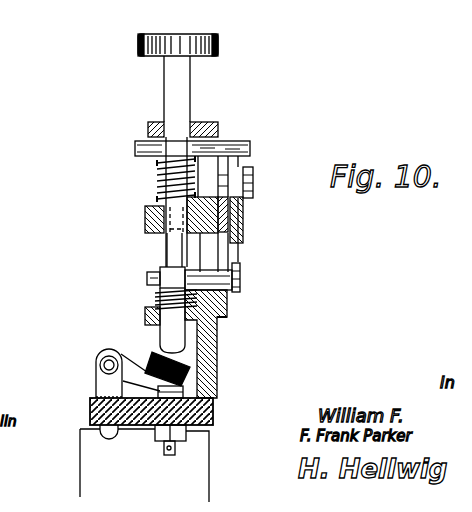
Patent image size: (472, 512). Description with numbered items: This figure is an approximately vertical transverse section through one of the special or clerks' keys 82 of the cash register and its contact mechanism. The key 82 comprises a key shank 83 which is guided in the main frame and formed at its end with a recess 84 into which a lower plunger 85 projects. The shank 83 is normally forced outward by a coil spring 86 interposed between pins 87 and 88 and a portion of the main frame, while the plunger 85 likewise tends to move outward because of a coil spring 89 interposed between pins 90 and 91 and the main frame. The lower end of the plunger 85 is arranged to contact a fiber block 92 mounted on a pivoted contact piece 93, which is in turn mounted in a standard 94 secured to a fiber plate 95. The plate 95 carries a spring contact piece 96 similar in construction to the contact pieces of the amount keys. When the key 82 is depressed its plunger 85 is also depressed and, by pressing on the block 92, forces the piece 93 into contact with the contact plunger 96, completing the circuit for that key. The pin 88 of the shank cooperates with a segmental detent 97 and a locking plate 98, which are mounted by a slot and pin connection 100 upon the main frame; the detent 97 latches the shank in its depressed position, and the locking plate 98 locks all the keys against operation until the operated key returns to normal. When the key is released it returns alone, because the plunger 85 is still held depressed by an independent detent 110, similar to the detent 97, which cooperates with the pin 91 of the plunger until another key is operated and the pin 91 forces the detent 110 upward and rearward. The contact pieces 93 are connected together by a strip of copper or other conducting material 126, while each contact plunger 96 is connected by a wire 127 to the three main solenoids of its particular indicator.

The special key 82 is at (150, 34).
The key shank 83 is at (180, 90).
The recess 84 is at (145, 218).
The lower plunger 85 is at (160, 270).
The coil spring 86 is at (160, 178).
The pin 87 is at (137, 150).
The pin 88 is at (240, 141).
The coil spring 89 is at (155, 299).
The pin 90 is at (148, 280).
The pin 91 is at (96, 381).
The fiber block 92 is at (150, 355).
The pivoted contact piece 93 is at (121, 357).
The standard 94 is at (227, 312).
The fiber plate 95 is at (214, 411).
The spring contact piece 96 is at (185, 392).
The segmental detent 97 is at (245, 212).
The locking plate 98 is at (245, 228).
The slot and pin connection 100 is at (255, 190).
The independent detent 110 is at (222, 318).
The conducting strip 126 is at (95, 399).
The wire 127 is at (210, 454).